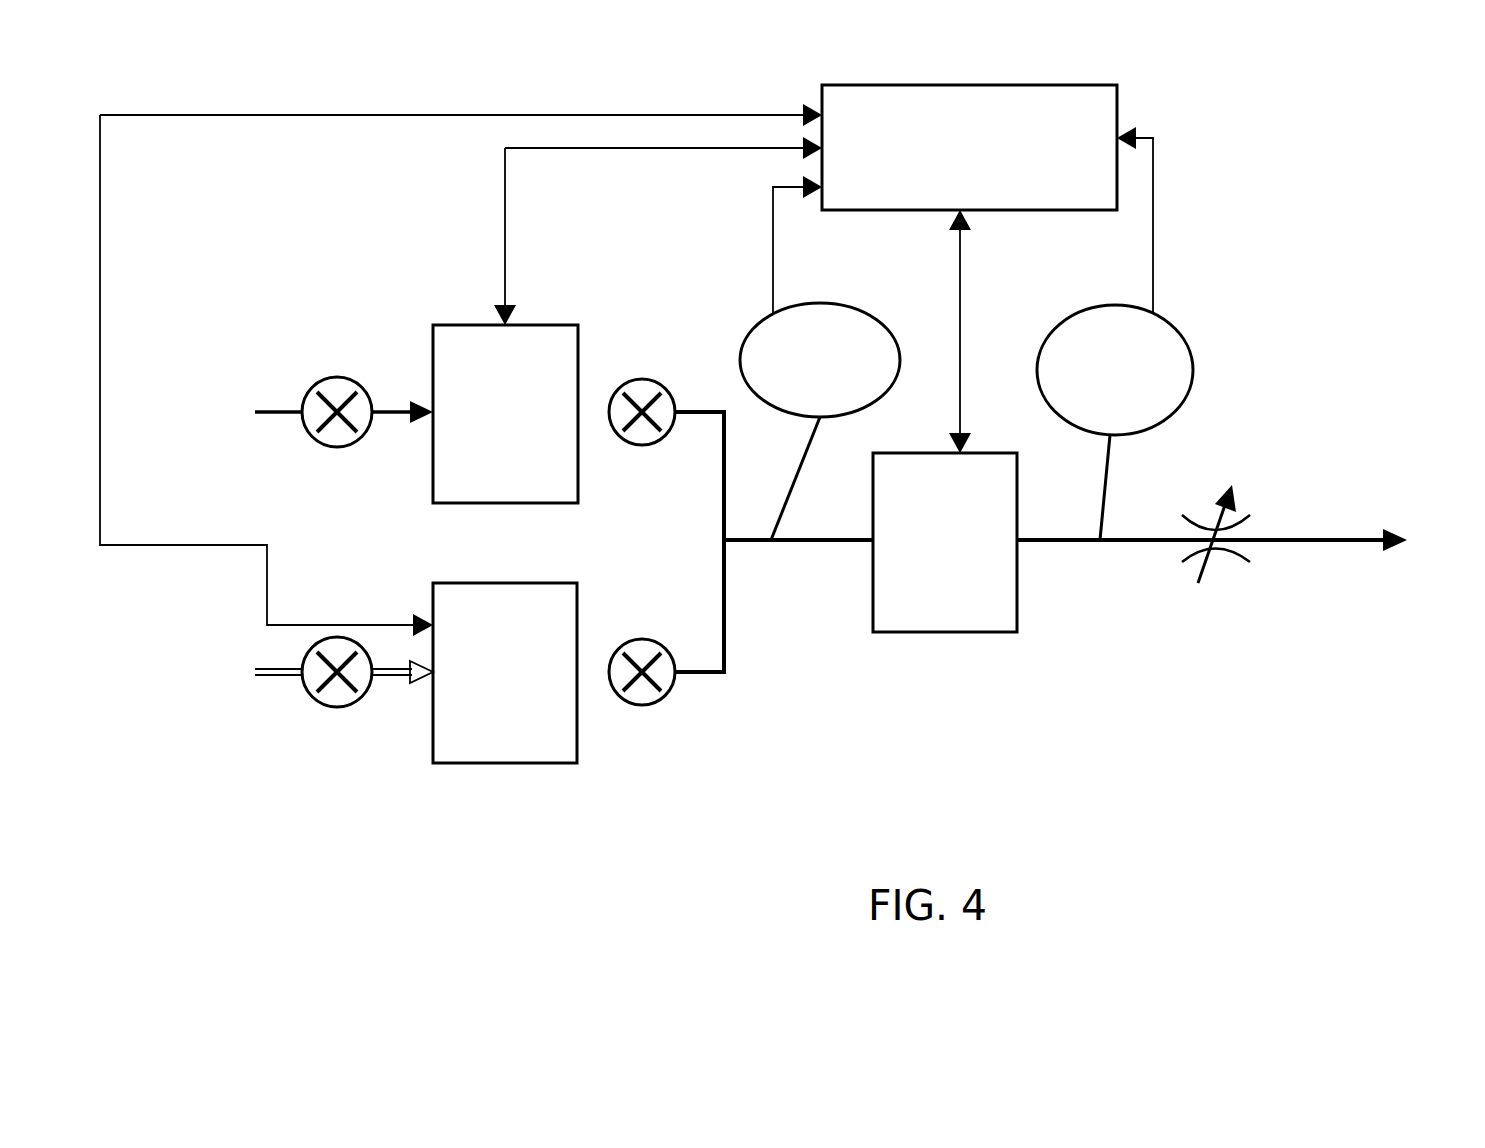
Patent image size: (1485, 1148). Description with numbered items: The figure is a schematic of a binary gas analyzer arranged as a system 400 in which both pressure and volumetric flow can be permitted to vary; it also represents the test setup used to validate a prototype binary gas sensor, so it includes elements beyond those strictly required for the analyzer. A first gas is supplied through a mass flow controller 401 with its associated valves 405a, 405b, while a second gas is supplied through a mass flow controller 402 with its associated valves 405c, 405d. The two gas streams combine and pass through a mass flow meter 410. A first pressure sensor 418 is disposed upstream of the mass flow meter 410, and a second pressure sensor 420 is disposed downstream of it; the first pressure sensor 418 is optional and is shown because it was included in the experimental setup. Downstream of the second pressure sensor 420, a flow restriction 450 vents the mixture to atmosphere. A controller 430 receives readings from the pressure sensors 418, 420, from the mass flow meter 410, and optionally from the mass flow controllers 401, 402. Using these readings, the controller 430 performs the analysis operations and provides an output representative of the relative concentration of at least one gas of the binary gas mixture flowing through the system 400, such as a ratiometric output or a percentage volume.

The system 400 is at (1355, 274).
The mass flow controller 401 is at (505, 414).
The mass flow controller 402 is at (505, 673).
The valve 405a is at (337, 377).
The valve 405b is at (642, 379).
The valve 405c is at (337, 707).
The valve 405d is at (642, 705).
The mass flow meter 410 is at (945, 542).
The first pressure sensor 418 is at (820, 421).
The second pressure sensor 420 is at (1115, 422).
The controller 430 is at (969, 147).
The flow restriction 450 is at (1240, 591).